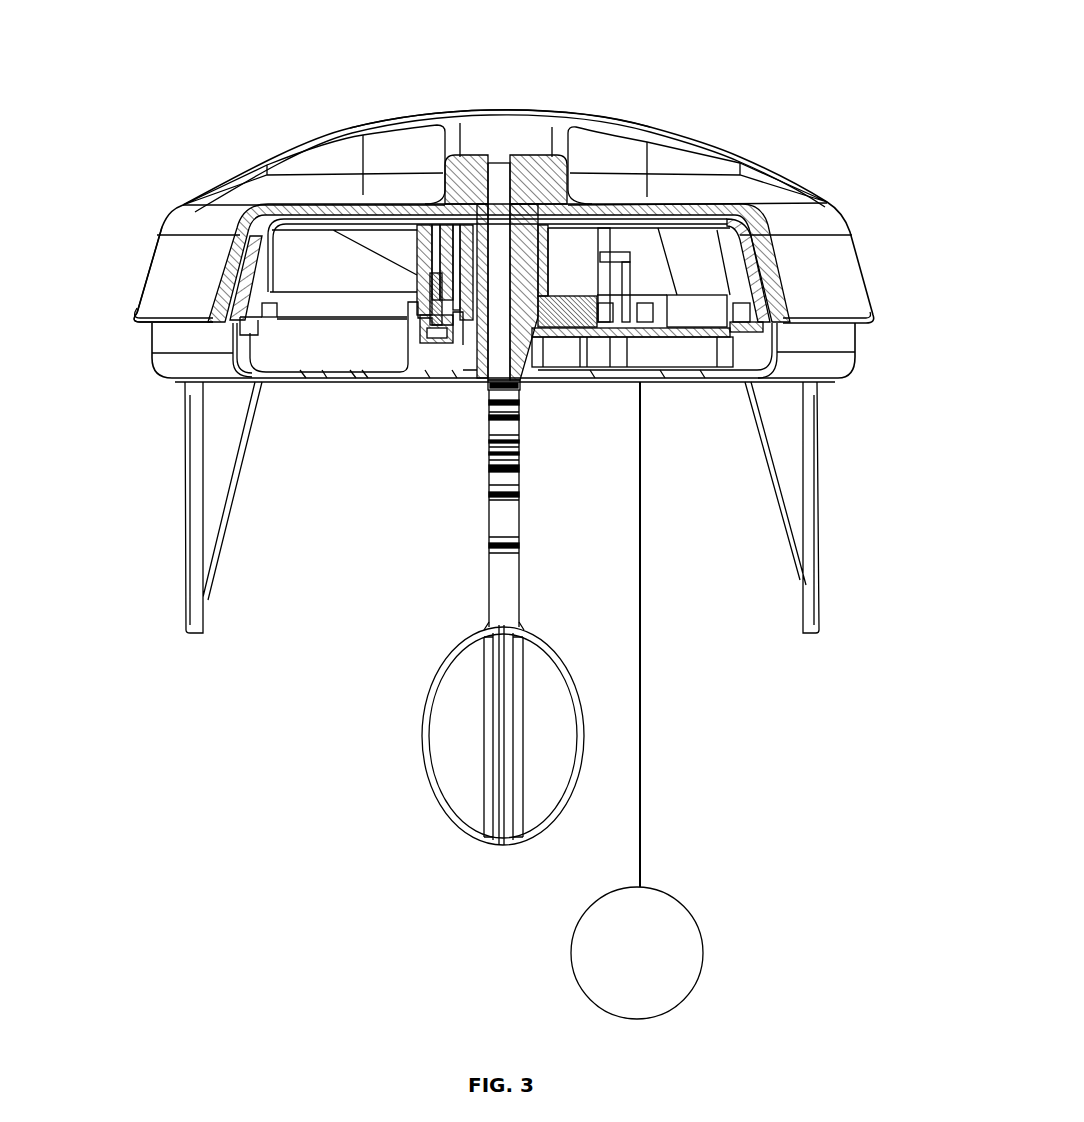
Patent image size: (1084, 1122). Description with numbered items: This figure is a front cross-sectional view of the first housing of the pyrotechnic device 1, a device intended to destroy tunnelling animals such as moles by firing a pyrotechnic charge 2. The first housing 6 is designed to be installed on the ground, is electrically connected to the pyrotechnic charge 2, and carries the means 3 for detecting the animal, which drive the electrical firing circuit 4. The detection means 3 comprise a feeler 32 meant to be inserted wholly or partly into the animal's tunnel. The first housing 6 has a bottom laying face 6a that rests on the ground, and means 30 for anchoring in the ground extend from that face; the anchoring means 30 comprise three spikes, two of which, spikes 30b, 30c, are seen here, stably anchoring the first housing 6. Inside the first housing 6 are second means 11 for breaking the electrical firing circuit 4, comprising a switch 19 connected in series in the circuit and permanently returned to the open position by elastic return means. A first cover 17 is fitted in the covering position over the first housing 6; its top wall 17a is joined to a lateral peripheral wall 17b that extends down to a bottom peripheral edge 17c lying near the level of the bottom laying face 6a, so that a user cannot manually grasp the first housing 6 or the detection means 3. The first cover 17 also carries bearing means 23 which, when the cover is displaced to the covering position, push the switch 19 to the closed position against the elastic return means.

The pyrotechnic device 1 is at (387, 96).
The pyrotechnic charge 2 is at (644, 964).
The detection means 3 is at (486, 607).
The electrical firing circuit 4 is at (694, 340).
The first housing 6 is at (378, 384).
The bottom laying face 6a is at (320, 382).
The second breaking means 11 is at (560, 337).
The first cover 17 is at (675, 107).
The top wall 17a is at (510, 120).
The lateral peripheral wall 17b is at (150, 295).
The bottom peripheral edge 17c is at (127, 318).
The switch 19 is at (532, 160).
The bearing means 23 is at (531, 386).
The anchoring means 30 is at (248, 658).
The spike 30b is at (810, 610).
The spike 30c is at (197, 600).
The feeler 32 is at (497, 522).